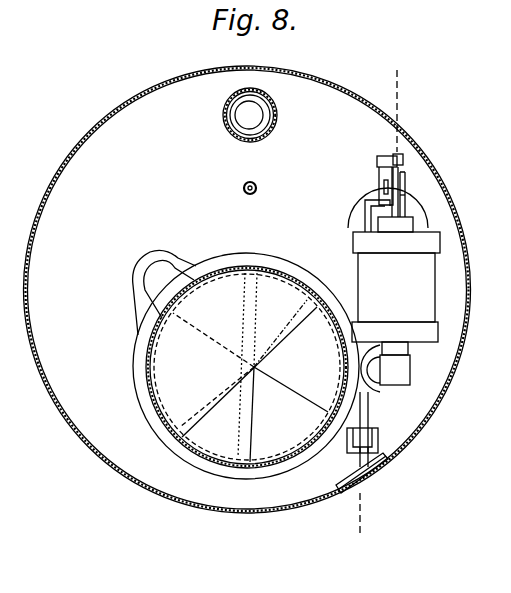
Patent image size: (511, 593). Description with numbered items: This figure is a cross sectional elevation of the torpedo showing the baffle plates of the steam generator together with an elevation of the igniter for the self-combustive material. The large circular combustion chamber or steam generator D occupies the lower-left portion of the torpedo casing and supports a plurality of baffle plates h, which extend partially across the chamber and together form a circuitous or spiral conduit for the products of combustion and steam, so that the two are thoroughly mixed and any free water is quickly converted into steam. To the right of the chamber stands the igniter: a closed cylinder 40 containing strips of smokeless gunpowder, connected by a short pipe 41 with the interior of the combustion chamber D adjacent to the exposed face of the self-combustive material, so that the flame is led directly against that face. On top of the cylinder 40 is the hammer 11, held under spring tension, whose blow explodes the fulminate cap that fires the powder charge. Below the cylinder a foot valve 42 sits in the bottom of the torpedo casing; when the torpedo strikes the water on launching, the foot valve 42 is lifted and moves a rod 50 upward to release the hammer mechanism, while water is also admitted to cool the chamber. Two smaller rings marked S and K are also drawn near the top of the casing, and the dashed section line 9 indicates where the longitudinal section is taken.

The section line 9 is at (397, 70).
The hammer 11 is at (394, 158).
The rod 50 is at (365, 212).
The closed cylinder 40 is at (396, 287).
The short pipe 41 is at (373, 376).
The foot valve 42 is at (372, 476).
The ring S is at (270, 118).
The pin K is at (256, 186).
The combustion chamber or steam generator D is at (233, 266).
The baffle plates h is at (293, 329).